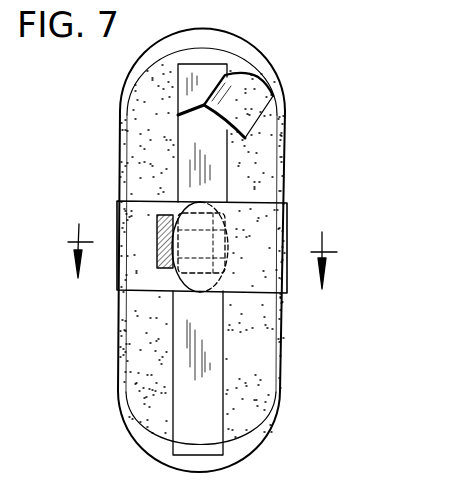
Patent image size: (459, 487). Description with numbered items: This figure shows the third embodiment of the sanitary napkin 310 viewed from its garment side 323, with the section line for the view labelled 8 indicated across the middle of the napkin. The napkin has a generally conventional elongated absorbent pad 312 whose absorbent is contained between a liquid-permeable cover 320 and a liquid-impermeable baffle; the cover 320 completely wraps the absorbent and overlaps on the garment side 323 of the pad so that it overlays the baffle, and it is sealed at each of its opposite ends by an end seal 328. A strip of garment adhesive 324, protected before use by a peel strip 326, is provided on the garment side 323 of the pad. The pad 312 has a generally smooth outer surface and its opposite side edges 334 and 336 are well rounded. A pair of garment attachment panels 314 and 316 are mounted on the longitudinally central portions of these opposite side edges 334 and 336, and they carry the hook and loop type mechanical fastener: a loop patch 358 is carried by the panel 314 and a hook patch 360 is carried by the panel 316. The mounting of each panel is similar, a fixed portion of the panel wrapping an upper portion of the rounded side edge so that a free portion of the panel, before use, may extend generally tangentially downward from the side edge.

The sanitary napkin 310 is at (103, 82).
The absorbent pad 312 is at (108, 110).
The garment attachment panel 314 is at (158, 190).
The garment attachment panel 316 is at (247, 192).
The liquid-permeable cover 320 is at (268, 366).
The garment side 323 is at (150, 338).
The garment adhesive 324 is at (178, 115).
The peel strip 326 is at (253, 100).
The end seal 328 is at (209, 36).
The side edge 334 is at (108, 315).
The side edge 336 is at (293, 332).
The loop patch 358 is at (157, 243).
The hook patch 360 is at (202, 247).
The section line 8- 8 is at (202, 252).